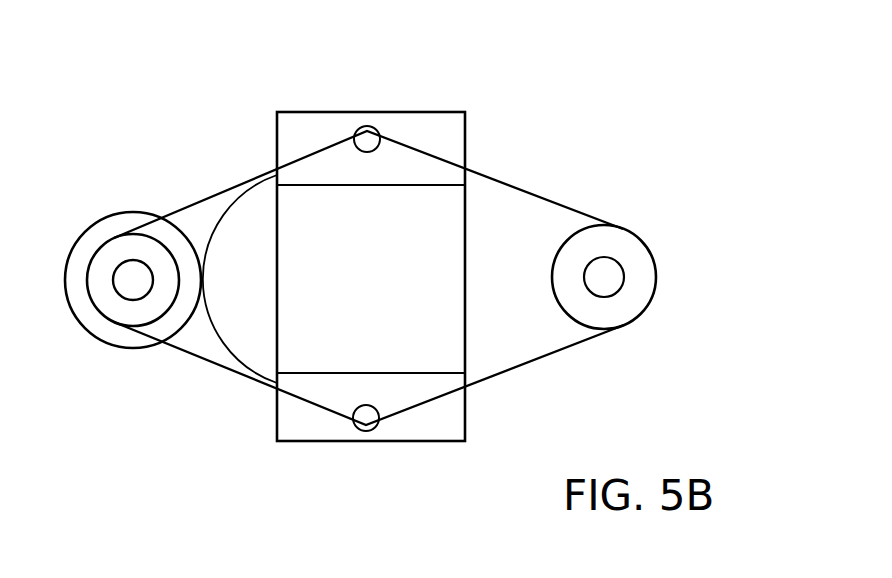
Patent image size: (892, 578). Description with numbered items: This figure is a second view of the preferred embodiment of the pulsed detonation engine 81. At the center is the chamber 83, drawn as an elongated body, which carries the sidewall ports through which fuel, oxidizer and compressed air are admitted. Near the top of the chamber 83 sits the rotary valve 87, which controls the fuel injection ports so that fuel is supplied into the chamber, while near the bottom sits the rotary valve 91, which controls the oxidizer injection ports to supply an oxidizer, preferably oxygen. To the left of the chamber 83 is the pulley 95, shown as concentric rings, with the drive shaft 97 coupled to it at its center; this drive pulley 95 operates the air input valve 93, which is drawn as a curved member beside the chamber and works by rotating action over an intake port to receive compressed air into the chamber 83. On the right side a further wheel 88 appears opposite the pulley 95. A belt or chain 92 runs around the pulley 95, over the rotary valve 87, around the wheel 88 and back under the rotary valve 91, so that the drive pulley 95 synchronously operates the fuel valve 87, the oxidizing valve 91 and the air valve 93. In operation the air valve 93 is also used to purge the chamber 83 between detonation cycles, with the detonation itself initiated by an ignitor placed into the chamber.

The pulsed detonation engine 81 is at (537, 442).
The chamber 83 is at (447, 310).
The rotary valve 87 is at (380, 136).
The right pulley 88 is at (585, 327).
The rotary valve 91 is at (378, 416).
The belt or chain 92 is at (537, 192).
The air input valve 93 is at (226, 360).
The pulley 95 is at (125, 347).
The drive shaft 97 is at (165, 245).